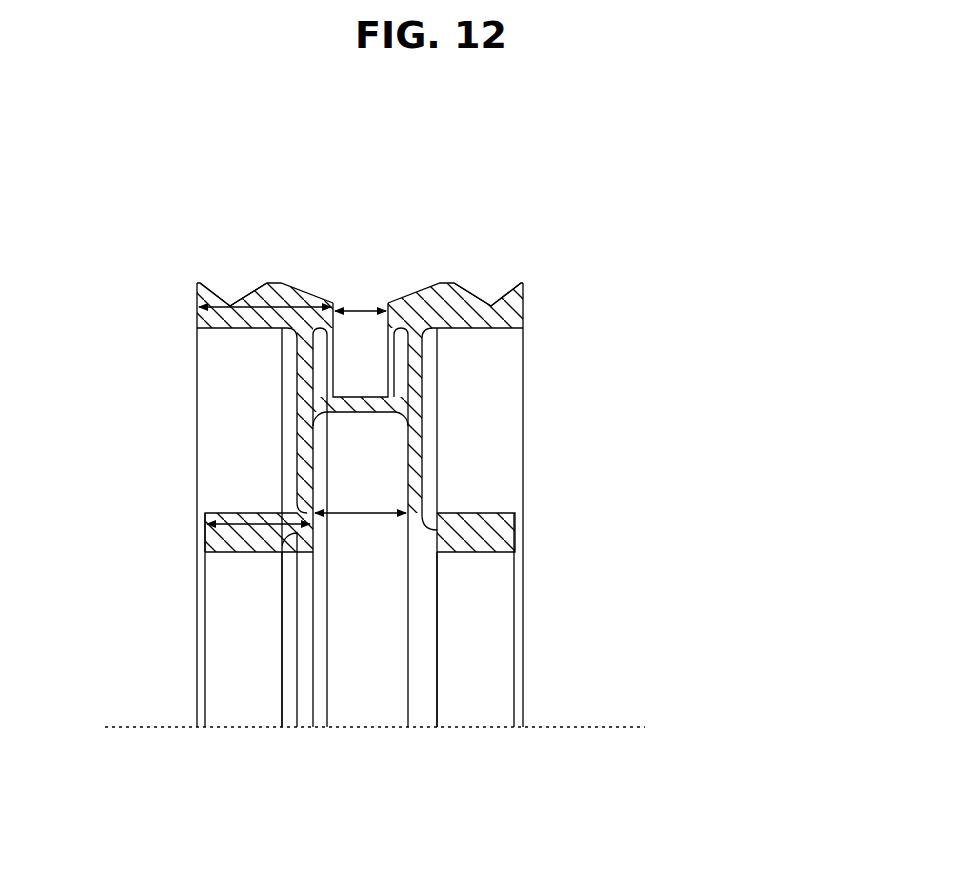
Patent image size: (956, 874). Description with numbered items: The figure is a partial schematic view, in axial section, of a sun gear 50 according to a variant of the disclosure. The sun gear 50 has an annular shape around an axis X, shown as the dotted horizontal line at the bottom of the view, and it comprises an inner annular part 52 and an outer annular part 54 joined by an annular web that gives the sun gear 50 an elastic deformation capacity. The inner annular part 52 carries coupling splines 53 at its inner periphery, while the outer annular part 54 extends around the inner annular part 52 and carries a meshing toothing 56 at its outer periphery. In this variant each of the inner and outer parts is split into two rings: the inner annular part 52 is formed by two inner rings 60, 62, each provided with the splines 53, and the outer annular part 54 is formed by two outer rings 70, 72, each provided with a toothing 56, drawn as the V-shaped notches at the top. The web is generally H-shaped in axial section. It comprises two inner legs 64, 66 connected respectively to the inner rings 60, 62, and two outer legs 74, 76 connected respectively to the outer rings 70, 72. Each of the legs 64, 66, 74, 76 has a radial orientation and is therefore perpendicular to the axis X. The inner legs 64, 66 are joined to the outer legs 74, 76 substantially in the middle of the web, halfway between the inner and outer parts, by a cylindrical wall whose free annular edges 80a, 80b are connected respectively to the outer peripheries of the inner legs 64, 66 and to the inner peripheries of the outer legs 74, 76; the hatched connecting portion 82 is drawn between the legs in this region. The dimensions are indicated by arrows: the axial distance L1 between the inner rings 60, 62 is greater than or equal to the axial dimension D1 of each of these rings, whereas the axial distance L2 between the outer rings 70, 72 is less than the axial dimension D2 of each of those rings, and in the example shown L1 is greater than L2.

The sun gear 50 is at (671, 303).
The inner annular part 52 is at (551, 543).
The coupling splines 53 is at (243, 658).
The outer annular part 54 is at (554, 282).
The meshing toothing 56 is at (322, 292).
The inner ring 60 is at (222, 543).
The inner ring 62 is at (517, 523).
The inner leg 64 is at (305, 453).
The inner leg 66 is at (424, 475).
The outer ring 70 is at (200, 308).
The outer ring 72 is at (522, 319).
The outer leg 74 is at (293, 373).
The outer leg 76 is at (424, 378).
The free annular edge 80a is at (310, 407).
The free annular edge 80b is at (424, 407).
The web 82 is at (424, 435).
The axial dimension of inner ring D1 is at (258, 513).
The axial dimension of outer ring D2 is at (267, 288).
The axial distance between inner rings L1 is at (360, 500).
The axial distance between outer rings L2 is at (361, 300).
The axis X is at (612, 727).